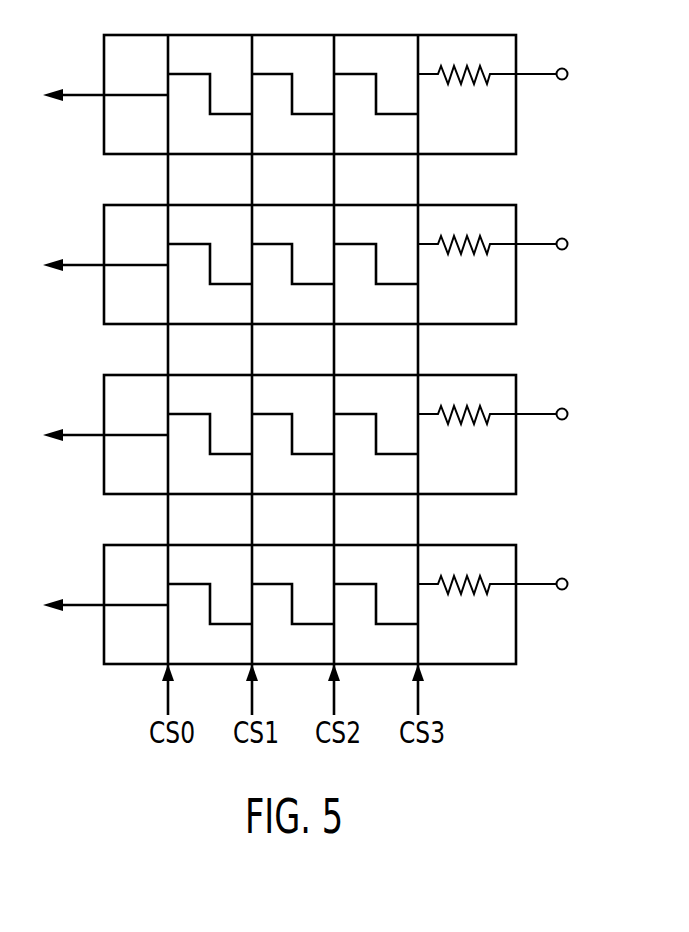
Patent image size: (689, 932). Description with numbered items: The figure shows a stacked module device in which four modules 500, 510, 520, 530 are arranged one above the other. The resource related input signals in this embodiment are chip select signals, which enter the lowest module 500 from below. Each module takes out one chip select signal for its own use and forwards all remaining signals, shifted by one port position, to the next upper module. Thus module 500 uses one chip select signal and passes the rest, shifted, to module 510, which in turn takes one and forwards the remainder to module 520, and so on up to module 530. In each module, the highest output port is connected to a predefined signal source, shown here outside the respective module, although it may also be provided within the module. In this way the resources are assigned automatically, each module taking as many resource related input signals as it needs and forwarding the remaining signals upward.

The module 500 is at (517, 645).
The module 510 is at (517, 475).
The module 520 is at (517, 305).
The module 530 is at (517, 135).